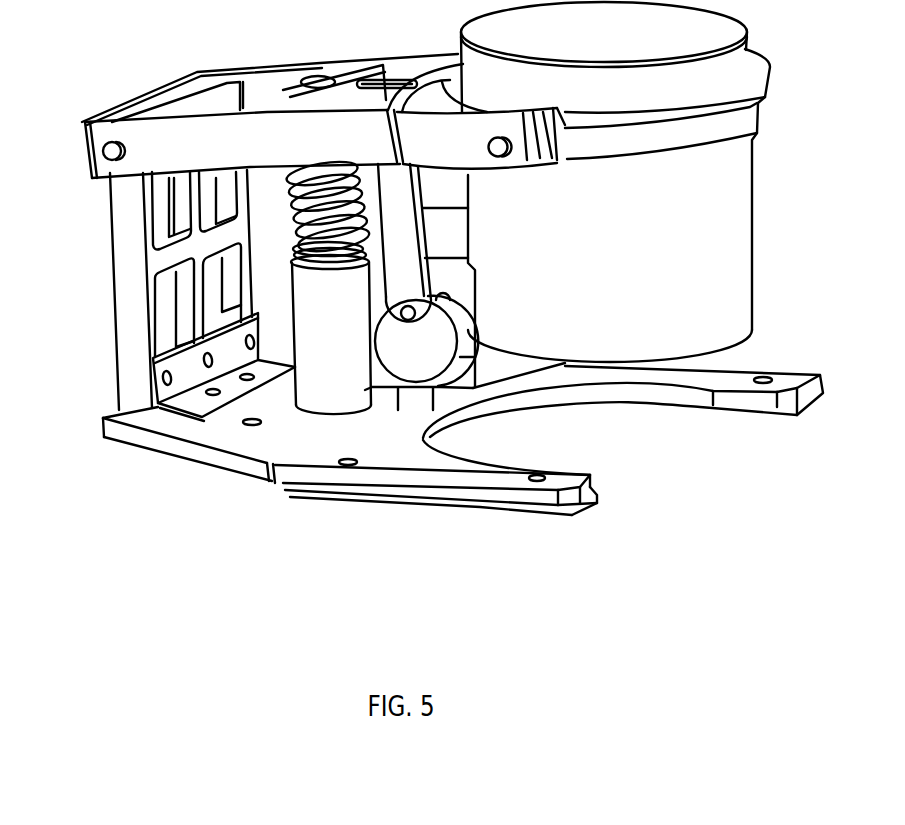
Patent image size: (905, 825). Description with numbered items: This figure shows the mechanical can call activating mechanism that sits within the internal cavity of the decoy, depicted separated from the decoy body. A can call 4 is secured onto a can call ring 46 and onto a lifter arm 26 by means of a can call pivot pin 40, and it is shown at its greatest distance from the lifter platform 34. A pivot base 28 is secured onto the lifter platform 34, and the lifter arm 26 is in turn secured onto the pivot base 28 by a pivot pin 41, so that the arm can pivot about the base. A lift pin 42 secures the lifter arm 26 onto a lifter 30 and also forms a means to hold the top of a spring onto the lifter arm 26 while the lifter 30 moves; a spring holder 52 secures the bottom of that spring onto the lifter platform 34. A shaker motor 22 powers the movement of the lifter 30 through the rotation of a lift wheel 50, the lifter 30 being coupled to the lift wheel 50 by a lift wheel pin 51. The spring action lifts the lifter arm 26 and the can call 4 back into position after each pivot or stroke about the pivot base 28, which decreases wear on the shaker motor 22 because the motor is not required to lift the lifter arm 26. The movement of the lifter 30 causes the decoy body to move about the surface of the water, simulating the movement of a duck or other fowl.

The can call 4 is at (615, 194).
The shaker motor 22 is at (449, 282).
The lifter arm 26 is at (325, 121).
The pivot base 28 is at (270, 236).
The lifter 30 is at (404, 243).
The lifter platform 34 is at (463, 414).
The can call pivot pin 40 is at (499, 134).
The pivot pin 41 is at (93, 151).
The lift pin 42 is at (320, 76).
The can call ring 46 is at (661, 131).
The lift wheel 50 is at (421, 351).
The lift wheel pin 51 is at (424, 313).
The spring holder 52 is at (328, 285).